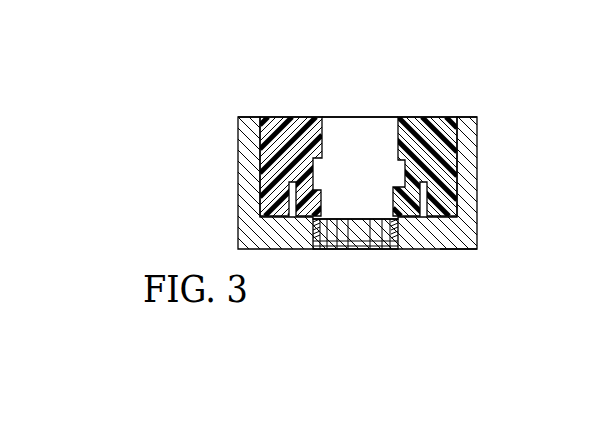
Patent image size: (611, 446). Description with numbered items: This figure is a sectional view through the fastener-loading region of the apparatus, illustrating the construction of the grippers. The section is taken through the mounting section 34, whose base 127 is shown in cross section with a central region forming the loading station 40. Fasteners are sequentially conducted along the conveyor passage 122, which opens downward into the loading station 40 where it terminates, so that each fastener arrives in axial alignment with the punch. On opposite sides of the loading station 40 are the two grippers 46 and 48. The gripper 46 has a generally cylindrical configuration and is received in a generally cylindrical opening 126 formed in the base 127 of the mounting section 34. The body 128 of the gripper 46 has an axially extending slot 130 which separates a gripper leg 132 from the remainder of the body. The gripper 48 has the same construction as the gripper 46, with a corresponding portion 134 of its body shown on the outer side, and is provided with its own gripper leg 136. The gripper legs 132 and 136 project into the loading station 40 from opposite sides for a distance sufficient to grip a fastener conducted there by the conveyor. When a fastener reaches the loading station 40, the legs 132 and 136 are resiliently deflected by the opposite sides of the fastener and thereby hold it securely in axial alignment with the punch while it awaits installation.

The mounting section 34 is at (478, 200).
The loading station 40 is at (357, 226).
The gripper 46 is at (293, 116).
The gripper 48 is at (446, 117).
The conveyor passage 122 is at (358, 172).
The cylindrical opening 126 is at (276, 178).
The base 127 is at (455, 235).
The body 128 is at (280, 134).
The slot 130 is at (268, 216).
The gripper leg 132 is at (301, 222).
The outer portion 134 is at (453, 149).
The gripper leg 136 is at (398, 232).